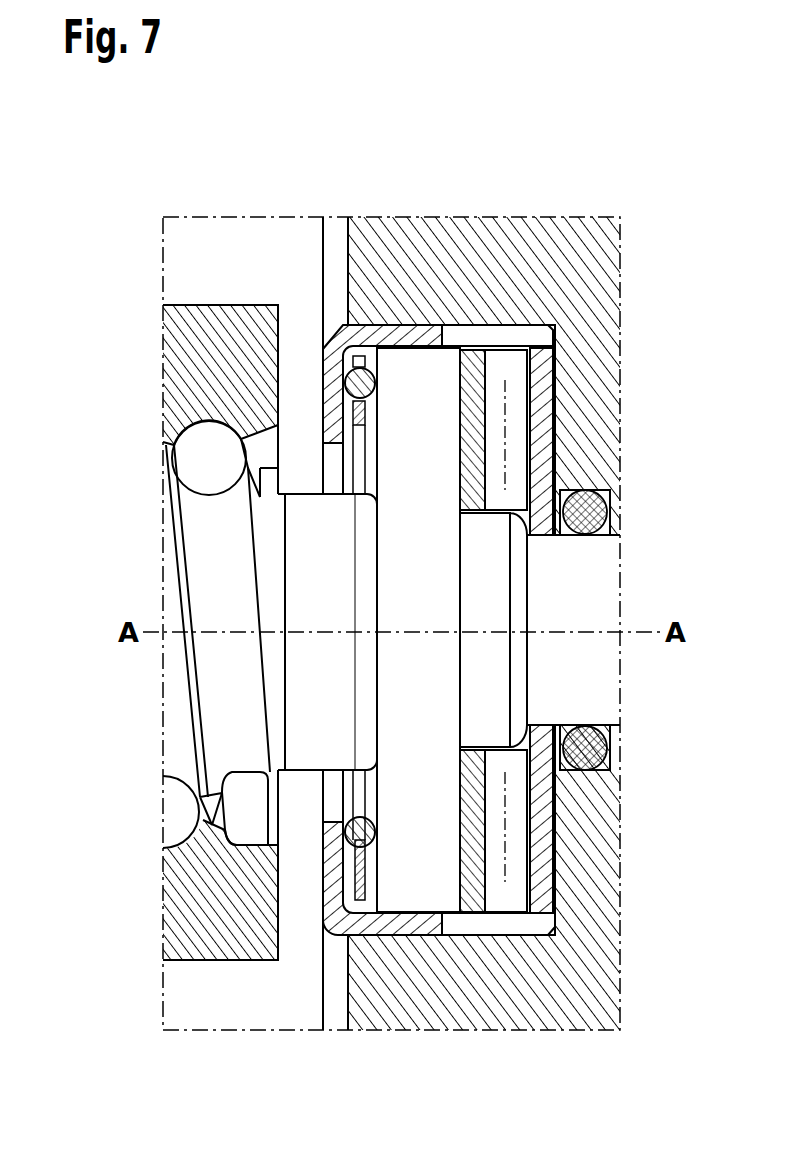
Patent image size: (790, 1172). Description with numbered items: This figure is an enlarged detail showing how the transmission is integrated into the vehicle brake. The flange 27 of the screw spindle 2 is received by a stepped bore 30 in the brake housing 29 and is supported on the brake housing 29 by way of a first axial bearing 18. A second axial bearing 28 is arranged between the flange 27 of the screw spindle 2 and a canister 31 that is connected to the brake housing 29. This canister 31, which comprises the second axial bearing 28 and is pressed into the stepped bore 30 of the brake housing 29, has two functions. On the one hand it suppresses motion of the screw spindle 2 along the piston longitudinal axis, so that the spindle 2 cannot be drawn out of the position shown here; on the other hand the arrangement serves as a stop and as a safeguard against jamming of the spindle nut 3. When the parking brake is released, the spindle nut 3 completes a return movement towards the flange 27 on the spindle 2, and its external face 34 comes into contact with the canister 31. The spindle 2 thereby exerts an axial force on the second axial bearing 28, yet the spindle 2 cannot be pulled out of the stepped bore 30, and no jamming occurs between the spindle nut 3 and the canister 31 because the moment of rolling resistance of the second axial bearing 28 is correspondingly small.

The screw spindle 2 is at (215, 690).
The spindle nut 3 is at (200, 912).
The first axial bearing 18 is at (507, 437).
The flange 27 is at (412, 898).
The second axial bearing 28 is at (364, 370).
The brake housing 29 is at (570, 980).
The stepped bore 30 is at (572, 353).
The canister 31 is at (332, 337).
The external face 34 is at (283, 933).